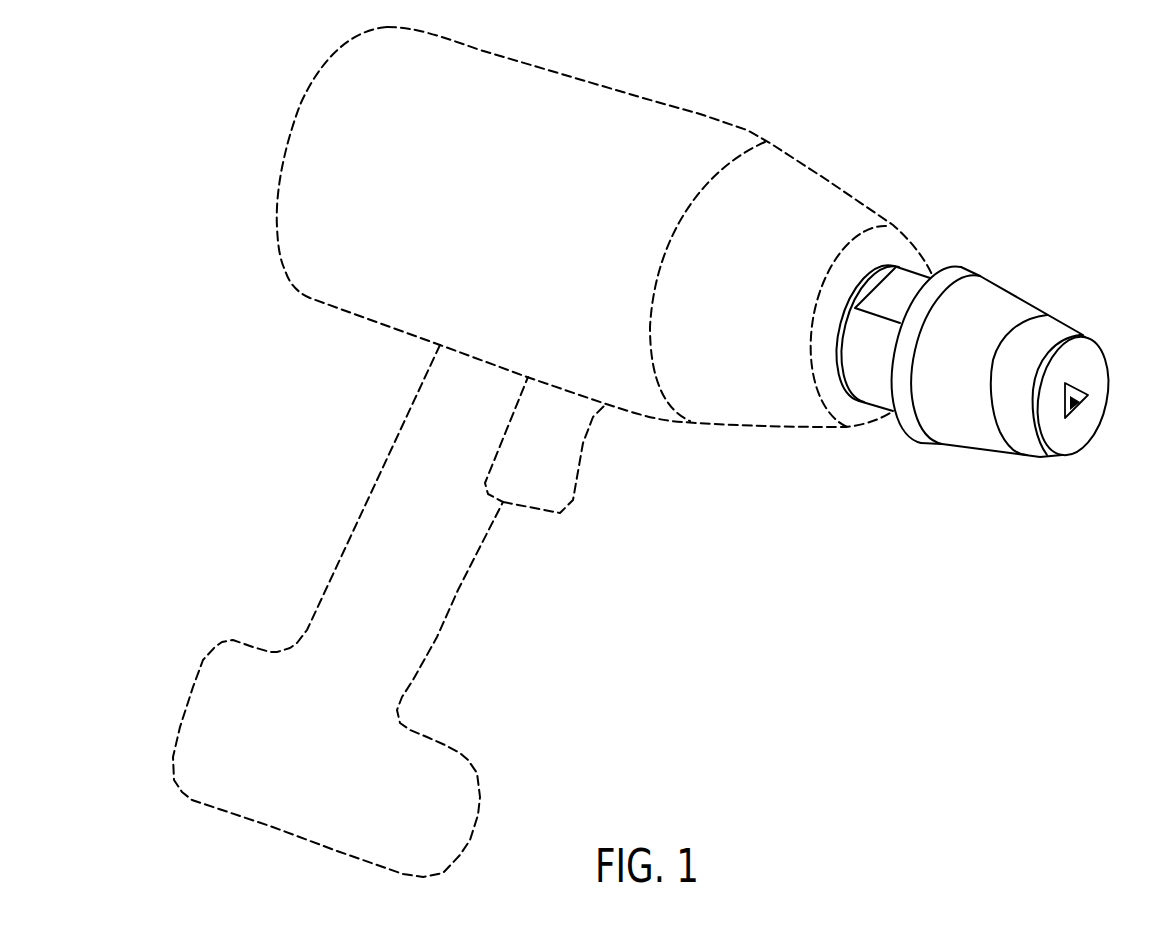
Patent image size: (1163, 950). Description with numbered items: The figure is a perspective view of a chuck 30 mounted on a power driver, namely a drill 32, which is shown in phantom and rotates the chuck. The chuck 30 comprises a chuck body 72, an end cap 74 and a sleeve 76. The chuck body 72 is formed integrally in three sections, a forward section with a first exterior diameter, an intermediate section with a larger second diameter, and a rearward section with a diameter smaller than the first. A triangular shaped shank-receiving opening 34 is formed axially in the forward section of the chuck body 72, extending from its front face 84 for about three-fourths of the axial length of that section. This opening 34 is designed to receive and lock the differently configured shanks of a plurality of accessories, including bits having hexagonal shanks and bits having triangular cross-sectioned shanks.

The chuck 30 is at (1072, 247).
The drill 32 is at (646, 96).
The shank-receiving opening 34 is at (1083, 402).
The chuck body 72 is at (1083, 469).
The end cap 74 is at (1042, 472).
The sleeve 76 is at (953, 466).
The front face 84 is at (1095, 372).